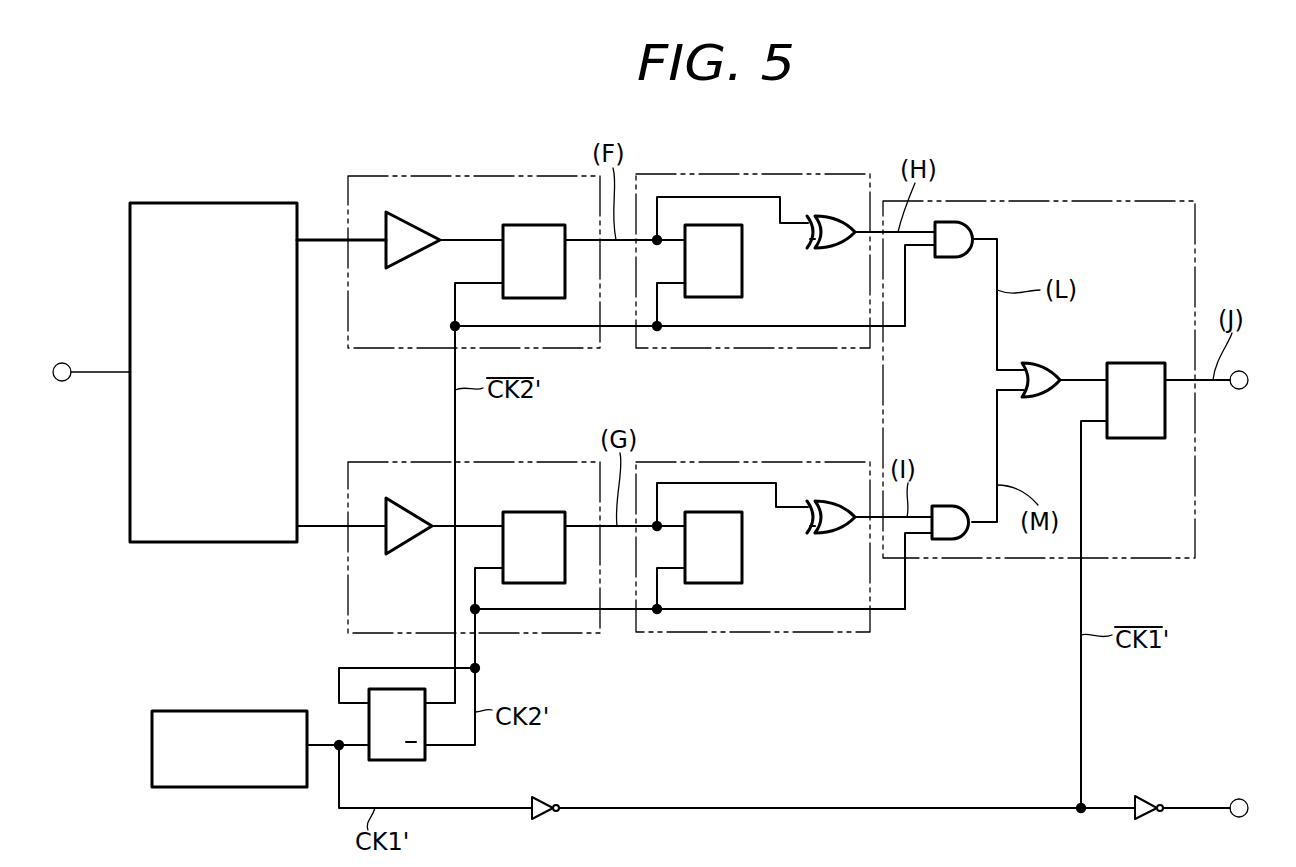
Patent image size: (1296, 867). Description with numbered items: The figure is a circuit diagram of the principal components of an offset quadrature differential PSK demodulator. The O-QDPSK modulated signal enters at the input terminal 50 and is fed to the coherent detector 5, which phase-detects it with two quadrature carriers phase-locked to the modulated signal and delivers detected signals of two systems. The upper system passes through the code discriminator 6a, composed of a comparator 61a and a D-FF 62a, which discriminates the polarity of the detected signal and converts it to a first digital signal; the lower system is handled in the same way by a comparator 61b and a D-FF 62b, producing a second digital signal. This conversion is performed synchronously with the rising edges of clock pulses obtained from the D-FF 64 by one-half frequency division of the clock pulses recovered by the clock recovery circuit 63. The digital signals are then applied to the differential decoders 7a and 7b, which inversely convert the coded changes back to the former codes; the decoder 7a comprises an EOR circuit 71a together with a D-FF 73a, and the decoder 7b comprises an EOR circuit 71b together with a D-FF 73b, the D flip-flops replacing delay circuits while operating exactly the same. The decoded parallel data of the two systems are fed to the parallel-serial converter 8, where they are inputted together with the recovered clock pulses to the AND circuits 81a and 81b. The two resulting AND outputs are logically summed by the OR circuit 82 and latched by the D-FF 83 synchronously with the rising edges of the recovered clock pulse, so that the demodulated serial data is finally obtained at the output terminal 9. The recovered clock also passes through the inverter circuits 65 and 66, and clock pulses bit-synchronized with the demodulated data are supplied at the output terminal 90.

The coherent detector 5 is at (215, 203).
The input terminal 50 is at (70, 350).
The code discriminator 6a is at (458, 176).
The comparator 61a is at (405, 270).
The D-FF 62a is at (535, 225).
The differential decoder 7a is at (757, 174).
The EOR circuit 71a is at (832, 250).
The D-FF 73a is at (742, 270).
The parallel-serial converter 8 is at (1068, 201).
The AND circuit 81a is at (945, 258).
The AND circuit 81b is at (950, 505).
The OR circuit 82 is at (1035, 398).
The D-FF 83 is at (1128, 438).
The output terminal 9 is at (1247, 374).
The inverter circuit 66 is at (397, 462).
The comparator 61b is at (405, 555).
The D-FF 62b is at (533, 512).
The differential decoder 7b is at (757, 462).
The EOR circuit 71b is at (832, 535).
The D-FF 73b is at (742, 568).
The clock recovery circuit 63 is at (214, 711).
The D-FF 64 is at (400, 760).
The inverter circuit 65 is at (545, 818).
The output terminal 90 is at (1246, 802).